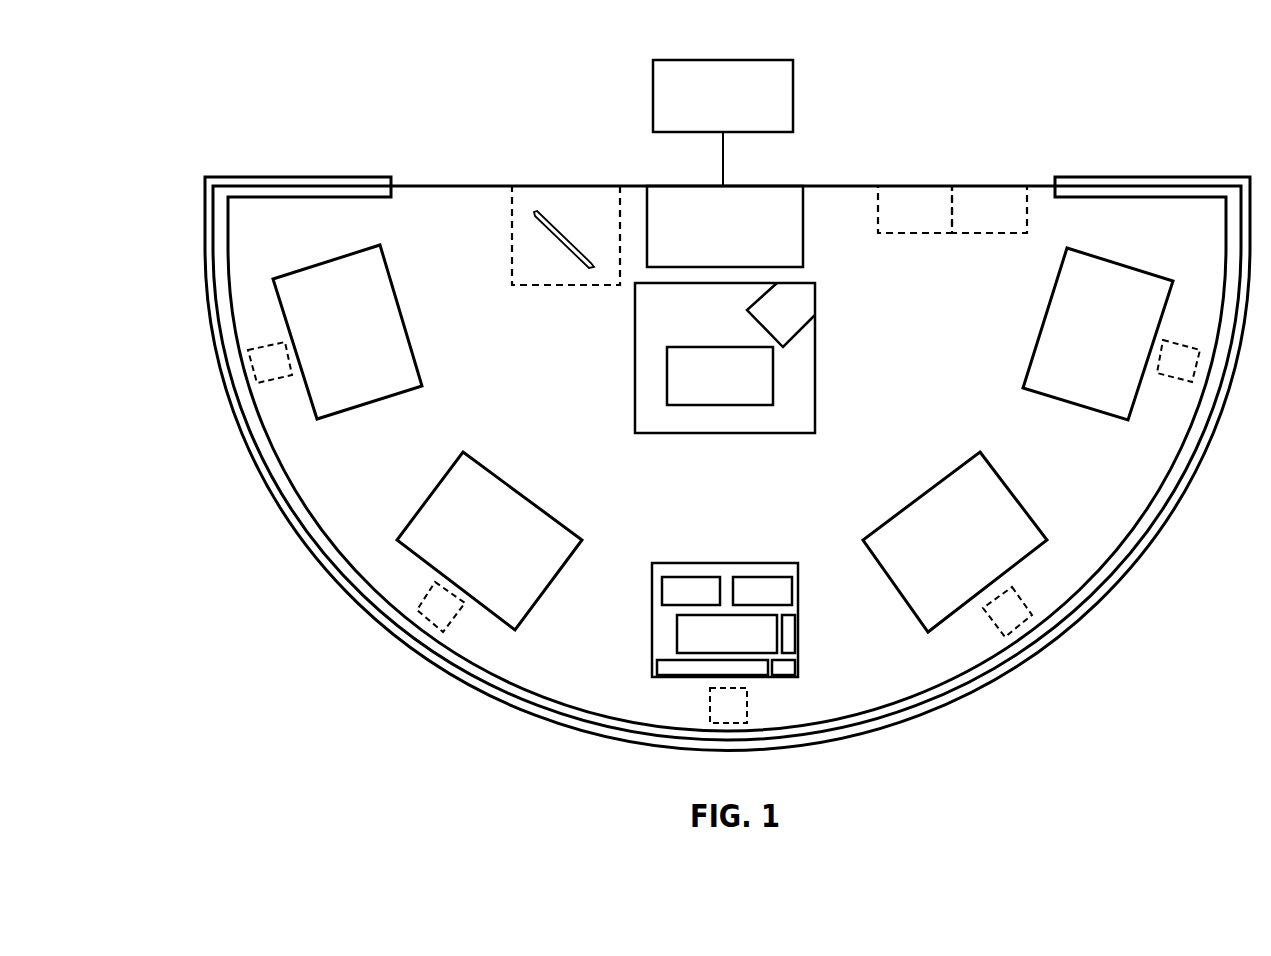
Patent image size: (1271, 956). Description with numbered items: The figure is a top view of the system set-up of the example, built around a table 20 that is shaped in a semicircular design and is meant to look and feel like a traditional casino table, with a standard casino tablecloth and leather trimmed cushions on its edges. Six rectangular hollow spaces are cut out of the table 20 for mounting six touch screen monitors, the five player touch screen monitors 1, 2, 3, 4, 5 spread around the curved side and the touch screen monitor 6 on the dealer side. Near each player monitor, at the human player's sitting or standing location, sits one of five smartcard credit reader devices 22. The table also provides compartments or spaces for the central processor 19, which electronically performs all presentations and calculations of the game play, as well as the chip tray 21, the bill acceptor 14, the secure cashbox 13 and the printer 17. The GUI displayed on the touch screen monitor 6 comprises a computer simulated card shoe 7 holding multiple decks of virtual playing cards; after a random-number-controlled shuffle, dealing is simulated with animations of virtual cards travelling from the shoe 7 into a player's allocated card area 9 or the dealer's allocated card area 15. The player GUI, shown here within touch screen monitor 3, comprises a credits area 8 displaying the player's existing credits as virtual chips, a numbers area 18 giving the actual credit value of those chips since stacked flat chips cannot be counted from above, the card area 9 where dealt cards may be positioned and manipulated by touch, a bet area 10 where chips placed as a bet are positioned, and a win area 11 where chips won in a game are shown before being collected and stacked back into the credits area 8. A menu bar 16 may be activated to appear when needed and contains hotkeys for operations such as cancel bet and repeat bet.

The touch screen monitor 1 is at (1098, 334).
The touch screen monitor 2 is at (955, 542).
The touch screen monitor 3 is at (725, 620).
The touch screen monitor 4 is at (489, 541).
The touch screen monitor 5 is at (347, 332).
The touch screen monitor 6 is at (725, 358).
The computer simulated card shoe 7 is at (781, 315).
The credits area 8 is at (712, 668).
The card area 9 is at (727, 634).
The bet area 10 is at (691, 591).
The win area 11 is at (762, 591).
The secure cashbox 13 is at (566, 235).
The bill acceptor 14 is at (915, 209).
The dealer's card area 15 is at (720, 376).
The menu bar 16 is at (790, 626).
The printer 17 is at (989, 209).
The numbers area 18 is at (783, 668).
The central processor 19 is at (723, 123).
The table 20 is at (206, 177).
The chip tray 21 is at (725, 226).
The smartcard reader device 22 is at (724, 531).